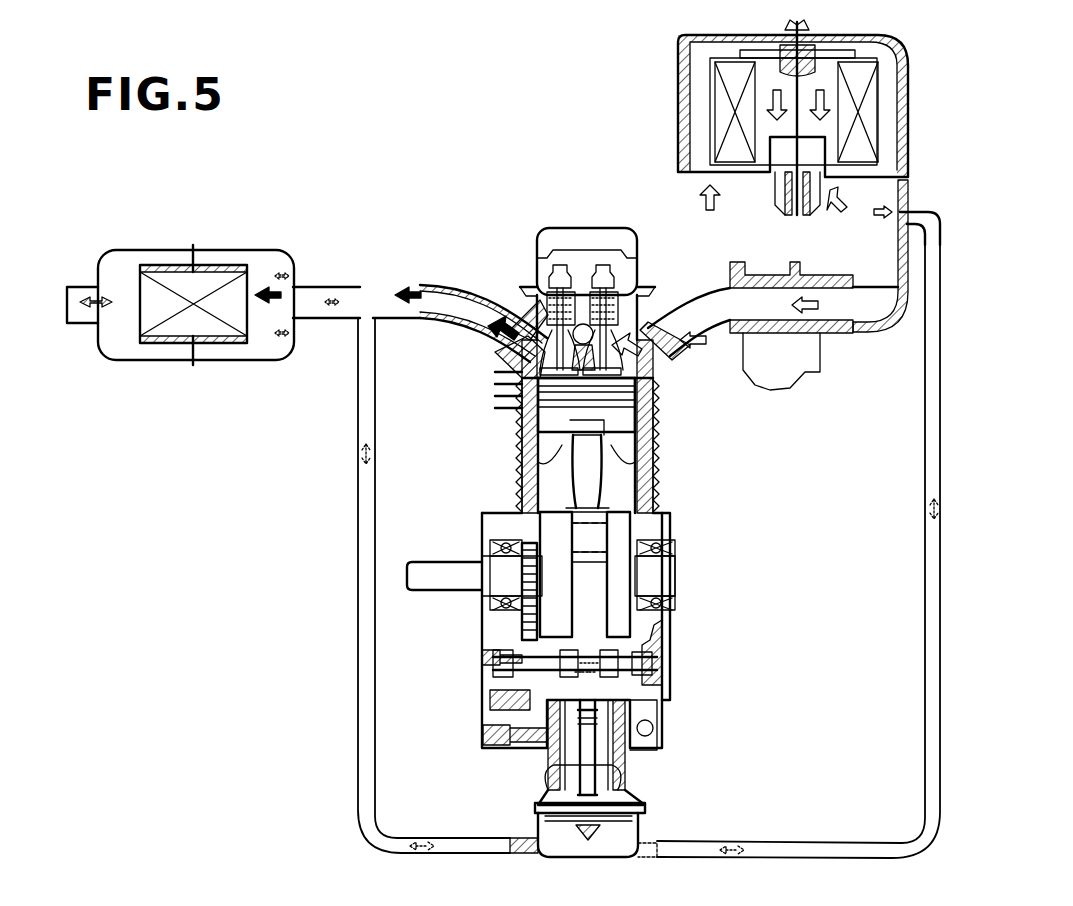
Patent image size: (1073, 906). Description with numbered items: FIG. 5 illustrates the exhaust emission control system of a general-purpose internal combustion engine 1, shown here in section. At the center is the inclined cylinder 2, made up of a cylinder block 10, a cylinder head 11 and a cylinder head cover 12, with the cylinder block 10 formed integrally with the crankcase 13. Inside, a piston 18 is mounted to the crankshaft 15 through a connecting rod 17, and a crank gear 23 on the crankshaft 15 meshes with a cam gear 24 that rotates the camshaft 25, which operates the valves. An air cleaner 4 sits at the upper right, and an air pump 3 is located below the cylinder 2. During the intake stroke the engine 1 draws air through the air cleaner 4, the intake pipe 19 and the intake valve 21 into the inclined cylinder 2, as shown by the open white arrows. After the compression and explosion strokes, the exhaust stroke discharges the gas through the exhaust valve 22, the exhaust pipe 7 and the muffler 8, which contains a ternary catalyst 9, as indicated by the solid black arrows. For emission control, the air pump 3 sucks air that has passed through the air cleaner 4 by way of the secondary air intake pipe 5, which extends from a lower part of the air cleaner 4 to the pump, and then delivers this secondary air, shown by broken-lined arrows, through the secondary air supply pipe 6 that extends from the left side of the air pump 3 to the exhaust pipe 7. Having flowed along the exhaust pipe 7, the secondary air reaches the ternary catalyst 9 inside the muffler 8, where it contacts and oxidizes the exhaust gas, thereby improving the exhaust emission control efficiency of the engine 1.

The general-purpose internal combustion engine 1 is at (375, 106).
The inclined cylinder 2 is at (660, 450).
The air pump 3 is at (640, 790).
The air cleaner 4 is at (908, 80).
The secondary air intake pipe 5 is at (940, 382).
The secondary air supply pipe 6 is at (358, 620).
The exhaust pipe 7 is at (360, 285).
The muffler 8 is at (155, 250).
The ternary catalyst 9 is at (155, 343).
The cylinder block 10 is at (522, 410).
The cylinder head 11 is at (497, 366).
The cylinder head cover 12 is at (537, 248).
The crankcase 13 is at (633, 690).
The crankshaft 15 is at (440, 572).
The connecting rod 17 is at (586, 490).
The piston 18 is at (607, 427).
The intake pipe 19 is at (728, 380).
The intake valve 21 is at (603, 262).
The exhaust valve 22 is at (560, 262).
The crank gear 23 is at (522, 546).
The cam gear 24 is at (500, 645).
The camshaft 25 is at (618, 650).